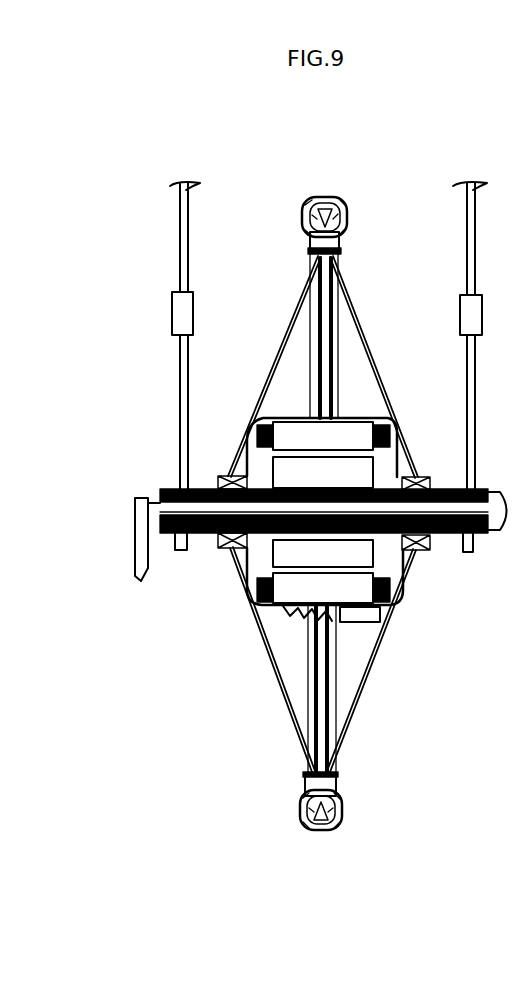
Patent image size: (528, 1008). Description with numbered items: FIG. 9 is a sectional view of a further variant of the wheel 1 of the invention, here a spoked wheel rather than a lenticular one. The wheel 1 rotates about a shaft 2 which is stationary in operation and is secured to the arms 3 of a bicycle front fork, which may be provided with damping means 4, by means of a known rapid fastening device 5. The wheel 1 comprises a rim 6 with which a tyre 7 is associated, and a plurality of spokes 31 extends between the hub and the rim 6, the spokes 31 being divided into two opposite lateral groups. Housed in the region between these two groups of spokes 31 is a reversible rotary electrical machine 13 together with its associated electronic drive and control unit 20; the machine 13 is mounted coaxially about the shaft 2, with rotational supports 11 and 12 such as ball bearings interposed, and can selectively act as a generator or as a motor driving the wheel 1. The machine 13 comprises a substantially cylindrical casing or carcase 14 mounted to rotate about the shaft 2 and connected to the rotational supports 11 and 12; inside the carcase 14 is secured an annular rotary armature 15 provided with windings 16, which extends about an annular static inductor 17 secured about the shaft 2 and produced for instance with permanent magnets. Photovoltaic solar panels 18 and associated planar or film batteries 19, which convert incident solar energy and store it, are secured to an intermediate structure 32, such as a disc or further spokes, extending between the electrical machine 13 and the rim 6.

The wheel 1 is at (258, 168).
The shaft 2 is at (172, 482).
The arms of a front fork 3 is at (180, 222).
The damping means 4 is at (172, 312).
The rapid fastening device 5 is at (132, 538).
The rim 6 is at (344, 240).
The tyre 7 is at (325, 197).
The rotational support 11 is at (218, 481).
The rotational support 12 is at (438, 480).
The reversible rotary electrical machine 13 is at (300, 505).
The casing or carcase 14 is at (268, 418).
The rotary armature 15 is at (302, 618).
The windings 16 is at (285, 590).
The static inductor 17 is at (292, 555).
The photovoltaic solar panel 18 is at (314, 297).
The planar or film battery 19 is at (314, 352).
The electronic drive and control unit 20 is at (370, 634).
The spokes 31 is at (362, 322).
The intermediate structure 32 is at (318, 376).